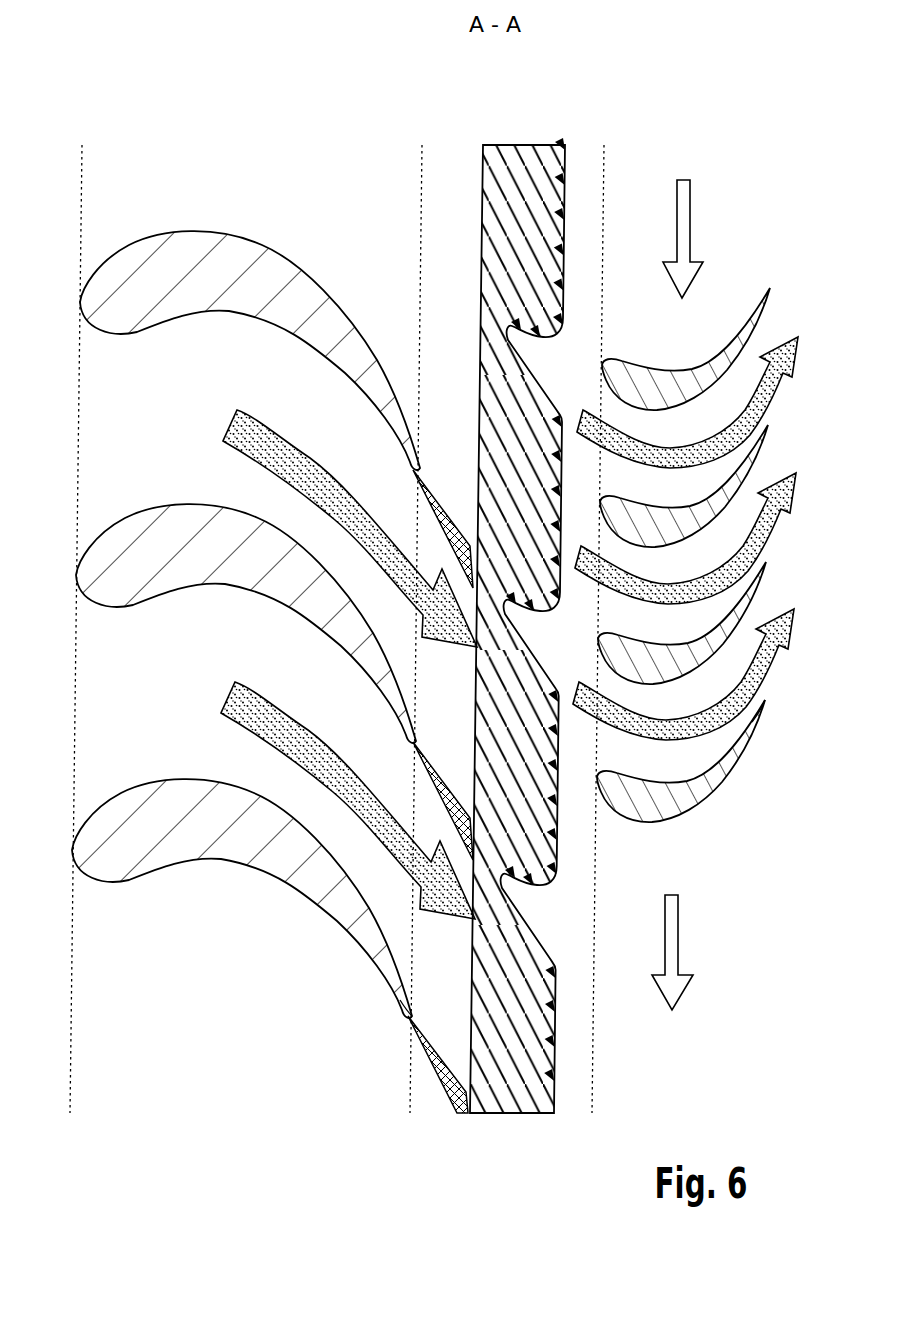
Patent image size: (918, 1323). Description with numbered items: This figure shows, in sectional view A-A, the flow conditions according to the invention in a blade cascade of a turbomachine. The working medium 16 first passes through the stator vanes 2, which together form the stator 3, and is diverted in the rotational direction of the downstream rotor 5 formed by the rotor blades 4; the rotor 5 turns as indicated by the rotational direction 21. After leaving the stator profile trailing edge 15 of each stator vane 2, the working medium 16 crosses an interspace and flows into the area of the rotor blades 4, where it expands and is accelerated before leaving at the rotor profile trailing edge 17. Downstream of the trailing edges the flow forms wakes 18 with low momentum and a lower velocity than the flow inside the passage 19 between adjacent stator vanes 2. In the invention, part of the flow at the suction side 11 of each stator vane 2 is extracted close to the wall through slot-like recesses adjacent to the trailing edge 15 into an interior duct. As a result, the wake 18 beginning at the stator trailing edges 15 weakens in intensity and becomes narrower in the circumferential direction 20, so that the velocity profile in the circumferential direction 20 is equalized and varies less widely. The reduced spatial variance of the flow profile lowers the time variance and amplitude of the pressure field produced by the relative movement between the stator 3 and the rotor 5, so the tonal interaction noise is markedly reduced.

The stator vane 2 is at (227, 852).
The stator 3 is at (145, 914).
The rotor blade 4 is at (694, 810).
The rotor 5 is at (757, 813).
The suction side 11 is at (328, 274).
The stator profile trailing edge 15 is at (405, 1019).
The working medium 16 is at (260, 415).
The rotor profile trailing edge 17 is at (770, 707).
The wake 18 is at (438, 497).
The passage 19 is at (331, 564).
The circumferential direction 20 is at (484, 160).
The rotational direction 21 is at (692, 215).